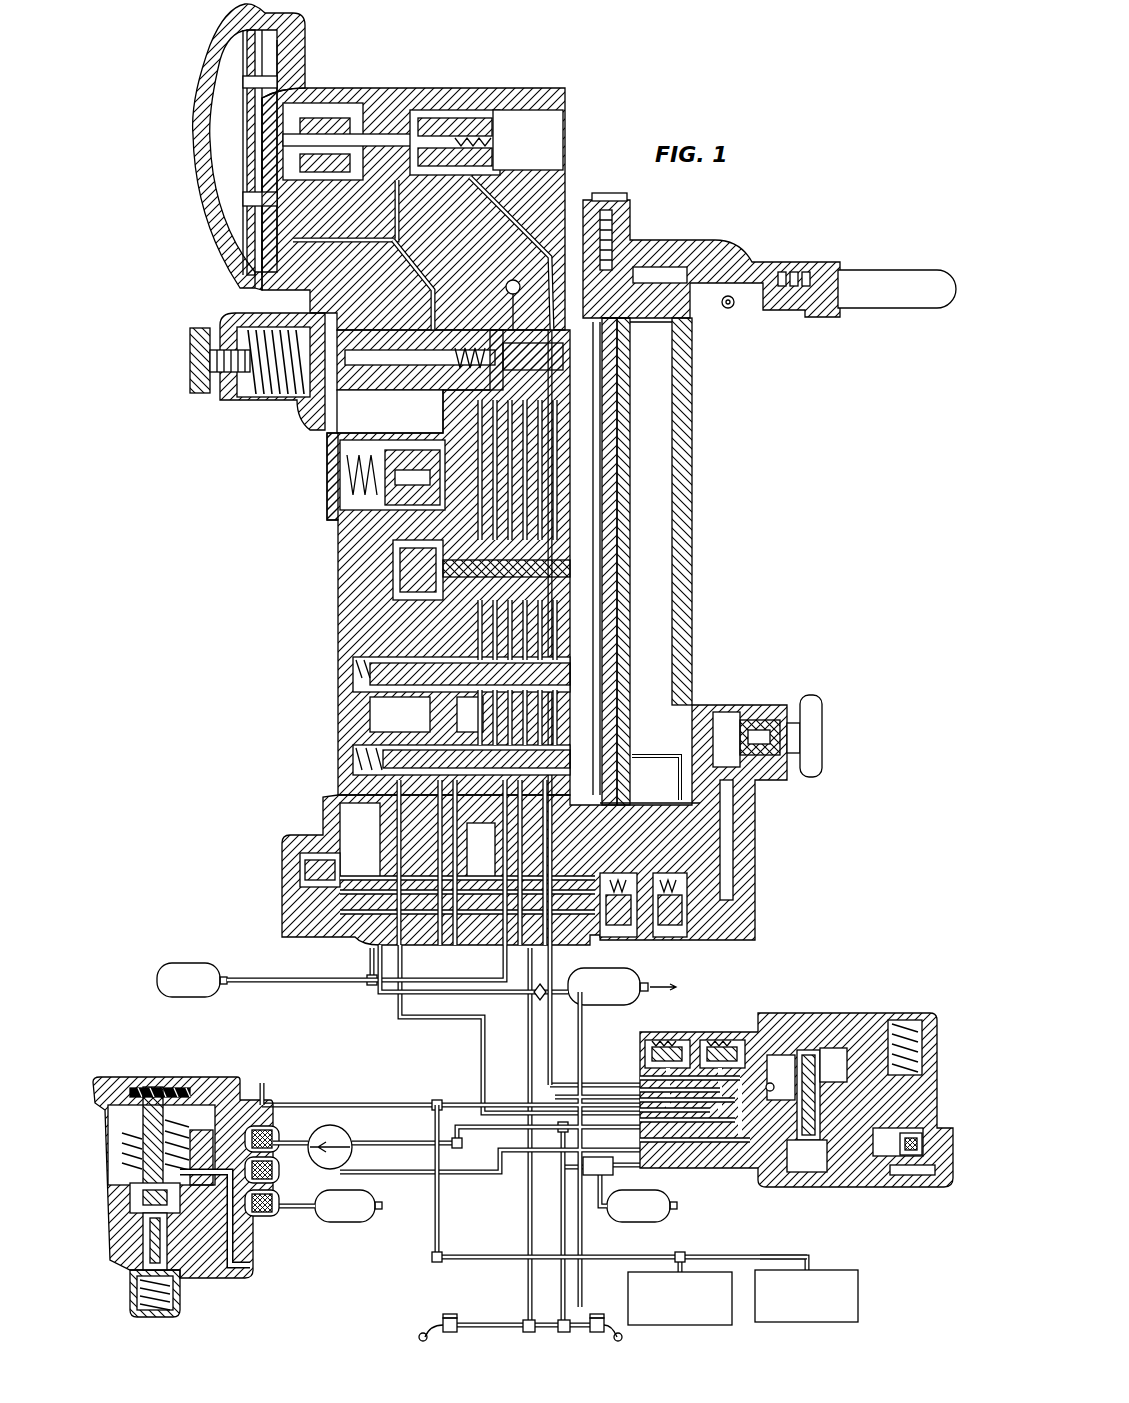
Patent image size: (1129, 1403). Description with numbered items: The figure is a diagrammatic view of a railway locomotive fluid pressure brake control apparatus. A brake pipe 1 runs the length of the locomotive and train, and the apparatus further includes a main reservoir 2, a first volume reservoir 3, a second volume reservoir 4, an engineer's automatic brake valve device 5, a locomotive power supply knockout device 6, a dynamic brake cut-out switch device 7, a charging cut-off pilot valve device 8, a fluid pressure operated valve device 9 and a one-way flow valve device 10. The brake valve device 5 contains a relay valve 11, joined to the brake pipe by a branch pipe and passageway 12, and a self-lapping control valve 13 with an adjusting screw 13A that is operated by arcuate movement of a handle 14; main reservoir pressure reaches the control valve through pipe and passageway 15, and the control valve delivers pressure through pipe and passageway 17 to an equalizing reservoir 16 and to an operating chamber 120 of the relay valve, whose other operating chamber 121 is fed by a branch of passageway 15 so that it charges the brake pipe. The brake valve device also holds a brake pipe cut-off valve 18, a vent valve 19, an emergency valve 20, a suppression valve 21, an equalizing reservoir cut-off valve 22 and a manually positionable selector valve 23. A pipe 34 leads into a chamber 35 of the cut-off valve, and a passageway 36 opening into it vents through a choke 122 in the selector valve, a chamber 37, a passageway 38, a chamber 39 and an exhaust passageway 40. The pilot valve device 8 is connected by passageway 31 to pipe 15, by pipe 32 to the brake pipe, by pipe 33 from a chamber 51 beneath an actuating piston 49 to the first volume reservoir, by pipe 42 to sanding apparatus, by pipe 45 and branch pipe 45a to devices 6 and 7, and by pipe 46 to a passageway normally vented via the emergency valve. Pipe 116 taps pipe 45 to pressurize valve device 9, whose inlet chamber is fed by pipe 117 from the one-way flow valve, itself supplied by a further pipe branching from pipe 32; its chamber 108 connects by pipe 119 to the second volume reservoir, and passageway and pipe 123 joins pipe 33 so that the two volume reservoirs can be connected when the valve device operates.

The brake pipe 1 is at (488, 1318).
The main reservoir 2 is at (628, 976).
The first volume reservoir 3 is at (678, 1205).
The second volume reservoir 4 is at (383, 1204).
The engineer's automatic brake valve device 5 is at (413, 184).
The locomotive power supply knockout device 6 is at (627, 1285).
The dynamic brake cut-out switch device 7 is at (860, 1285).
The charging cut-off pilot valve device 8 is at (812, 1095).
The fluid pressure operated valve device 9 is at (186, 1194).
The one-way flow valve device 10 is at (350, 1135).
The relay valve 11 is at (215, 50).
The branch pipe and passageway 12 is at (415, 270).
The self-lapping regulating or control valve 13 is at (225, 403).
The adjusting screw 13A is at (190, 358).
The handle 14 is at (800, 275).
The pipe and passageway 15 is at (498, 208).
The equalizing reservoir 16 is at (180, 962).
The pipe and passageway 17 is at (360, 958).
The brake pipe cut-off valve 18 is at (327, 452).
The vent valve 19 is at (337, 576).
The emergency valve 20 is at (338, 668).
The suppression valve 21 is at (338, 760).
The equalizing reservoir cut-off valve 22 is at (290, 835).
The selector valve 23 is at (757, 845).
The passageway and pipe 31 is at (550, 1035).
The port, pipe and passageway 32 is at (563, 1300).
The passageway and pipe 33 is at (601, 1173).
The pipe and passageway 34 is at (443, 535).
The chamber 35 is at (385, 500).
The passageway 36 is at (662, 803).
The chamber 37 is at (728, 712).
The passageway 38 is at (680, 755).
The chamber 39 is at (670, 630).
The exhaust passageway 40 is at (506, 288).
The pipe 42 is at (598, 1087).
The pipe 45 is at (442, 1260).
The branch pipe 45a is at (768, 1258).
The pipe and passageway 46 is at (397, 822).
The actuating piston 49 is at (930, 1157).
The chamber 51 is at (910, 1180).
The chamber 108 is at (176, 1307).
The passageway and pipe 116 is at (266, 1100).
The passageway and pipe 117 is at (275, 1140).
The passageway and pipe 119 is at (273, 1210).
The operating chamber 120 is at (218, 74).
The operating chamber 121 is at (460, 110).
The restriction or choke 122 is at (735, 790).
The passageway and pipe 123 is at (245, 1164).